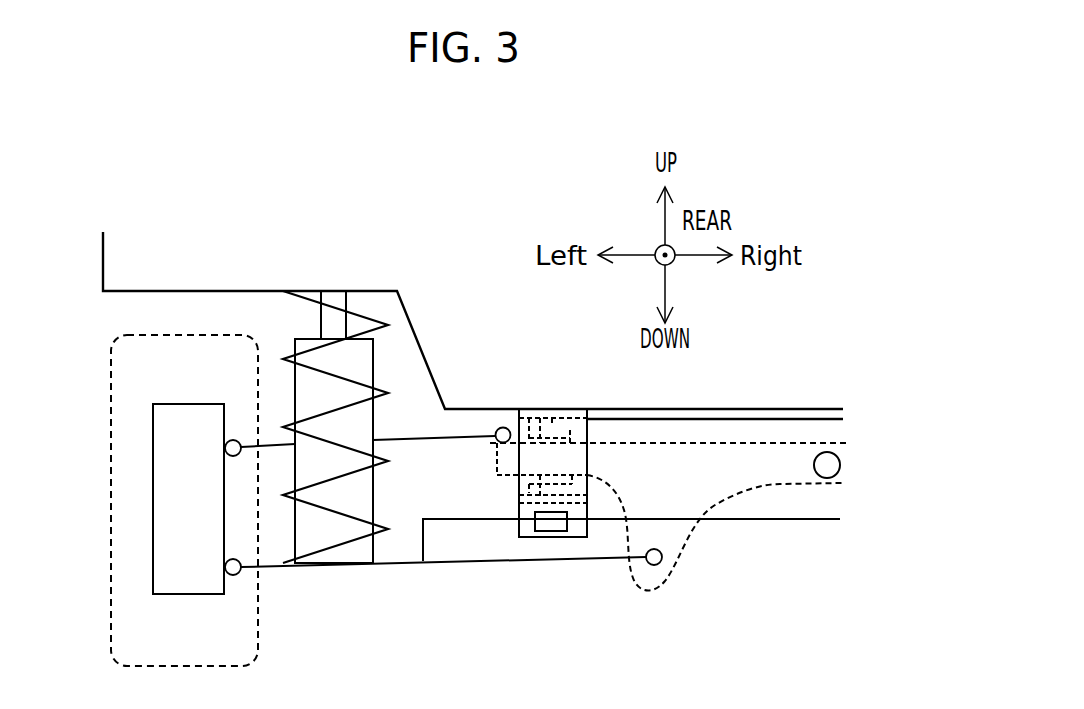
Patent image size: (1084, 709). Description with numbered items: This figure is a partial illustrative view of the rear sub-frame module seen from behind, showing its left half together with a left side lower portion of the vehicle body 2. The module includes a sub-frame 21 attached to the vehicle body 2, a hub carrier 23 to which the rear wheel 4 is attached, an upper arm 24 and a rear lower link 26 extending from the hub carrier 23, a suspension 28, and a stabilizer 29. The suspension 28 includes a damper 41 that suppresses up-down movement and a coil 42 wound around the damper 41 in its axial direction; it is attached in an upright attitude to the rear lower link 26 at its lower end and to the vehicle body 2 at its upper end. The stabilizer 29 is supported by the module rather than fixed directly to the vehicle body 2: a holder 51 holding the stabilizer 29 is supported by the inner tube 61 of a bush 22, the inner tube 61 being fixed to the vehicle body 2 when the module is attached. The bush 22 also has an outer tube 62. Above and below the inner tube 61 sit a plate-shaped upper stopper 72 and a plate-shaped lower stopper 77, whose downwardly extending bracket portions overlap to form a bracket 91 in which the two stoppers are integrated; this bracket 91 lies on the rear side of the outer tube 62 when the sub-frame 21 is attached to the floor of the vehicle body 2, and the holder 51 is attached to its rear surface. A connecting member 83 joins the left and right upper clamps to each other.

The vehicle body 2 is at (103, 262).
The rear wheel 4 is at (110, 462).
The sub-frame 21 is at (760, 488).
The bush 22 is at (572, 322).
The hub carrier 23 is at (170, 537).
The upper arm 24 is at (417, 441).
The rear lower link 26 is at (404, 566).
The suspension 28 is at (178, 185).
The stabilizer 29 is at (483, 520).
The damper 41 is at (297, 339).
The coil 42 is at (283, 360).
The holder 51 is at (551, 524).
The inner tube 61 is at (549, 405).
The outer tube 62 is at (528, 405).
The upper stopper 72 is at (583, 406).
The lower stopper 77 is at (516, 497).
The connecting member 83 is at (777, 410).
The bracket 91 is at (580, 538).